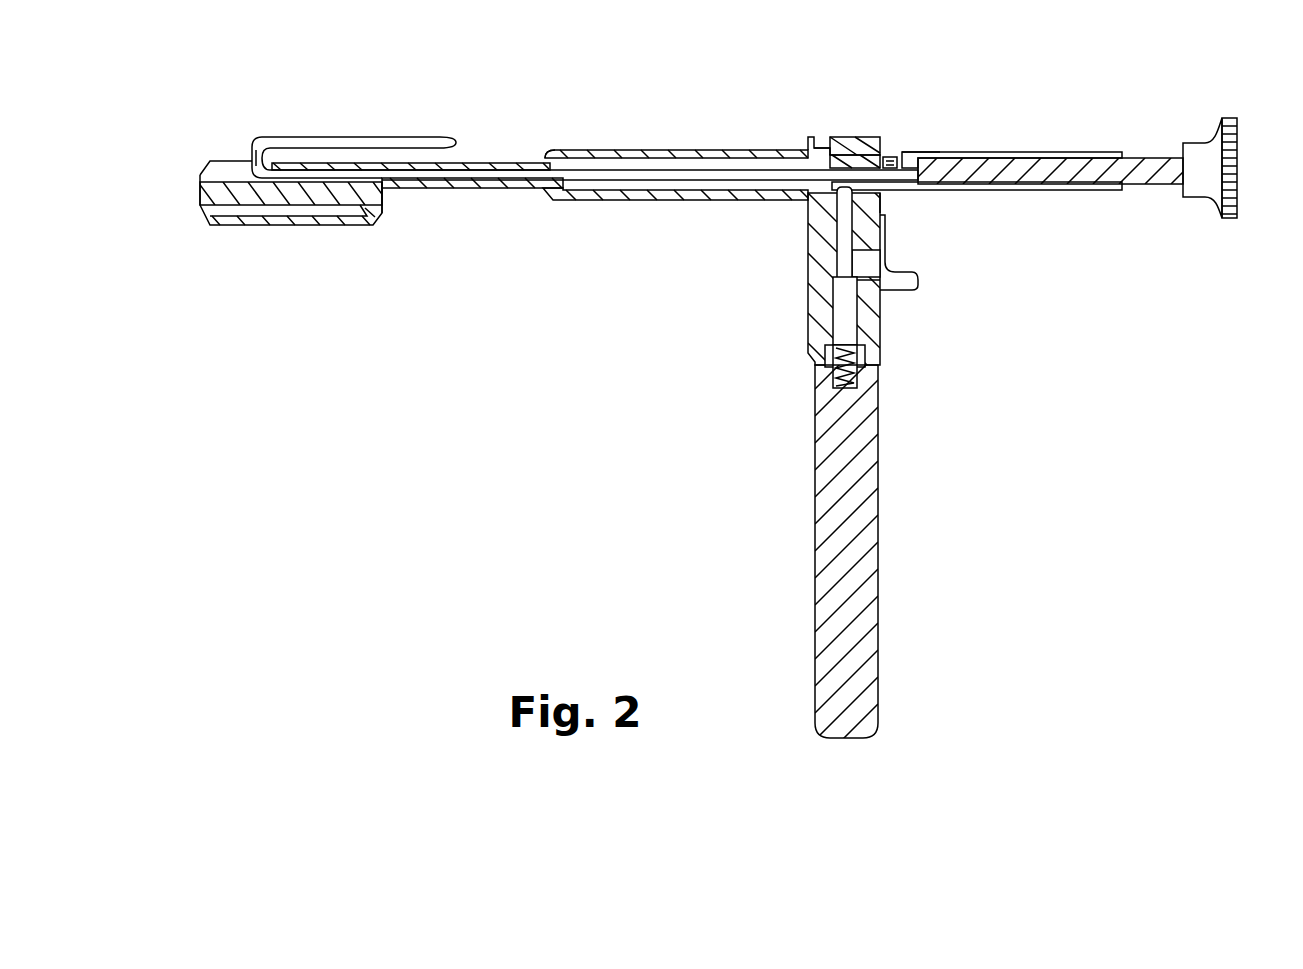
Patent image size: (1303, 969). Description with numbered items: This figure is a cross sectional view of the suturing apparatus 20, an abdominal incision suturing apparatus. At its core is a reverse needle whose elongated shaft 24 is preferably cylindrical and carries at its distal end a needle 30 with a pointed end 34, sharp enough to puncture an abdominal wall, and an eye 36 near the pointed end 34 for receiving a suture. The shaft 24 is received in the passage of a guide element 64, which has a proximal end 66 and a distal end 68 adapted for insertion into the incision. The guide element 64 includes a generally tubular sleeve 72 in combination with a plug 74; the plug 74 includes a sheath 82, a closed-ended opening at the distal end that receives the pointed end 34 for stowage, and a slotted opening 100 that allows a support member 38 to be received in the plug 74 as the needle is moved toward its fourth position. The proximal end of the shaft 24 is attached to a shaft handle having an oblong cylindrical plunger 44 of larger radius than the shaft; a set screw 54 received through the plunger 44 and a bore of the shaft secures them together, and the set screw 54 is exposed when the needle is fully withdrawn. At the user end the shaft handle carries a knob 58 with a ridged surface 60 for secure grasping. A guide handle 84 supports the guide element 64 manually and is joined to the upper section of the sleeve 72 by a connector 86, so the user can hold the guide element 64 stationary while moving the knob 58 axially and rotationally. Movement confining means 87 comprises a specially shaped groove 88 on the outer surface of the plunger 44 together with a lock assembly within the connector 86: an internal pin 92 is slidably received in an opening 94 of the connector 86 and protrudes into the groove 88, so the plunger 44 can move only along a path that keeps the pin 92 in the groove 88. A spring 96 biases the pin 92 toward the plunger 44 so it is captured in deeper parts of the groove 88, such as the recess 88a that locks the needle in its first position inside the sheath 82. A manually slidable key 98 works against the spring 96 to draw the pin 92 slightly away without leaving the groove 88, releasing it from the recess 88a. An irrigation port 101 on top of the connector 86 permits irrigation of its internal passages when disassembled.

The suturing apparatus 20 is at (564, 510).
The elongated shaft 24 is at (652, 182).
The needle 30 is at (303, 137).
The pointed end 34 is at (448, 144).
The eye 36 is at (424, 133).
The support member 38 is at (255, 146).
The plunger 44 is at (1086, 158).
The set screw 54 is at (900, 163).
The knob 58 is at (1200, 185).
The ridged surface 60 is at (1230, 118).
The guide element 64 is at (547, 236).
The proximal end 66 is at (806, 146).
The distal end 68 is at (234, 225).
The sleeve 72 is at (553, 159).
The plug 74 is at (384, 218).
The sheath 82 is at (222, 209).
The guide handle 84 is at (862, 548).
The connector 86 is at (860, 138).
The movement confining means 87 is at (984, 236).
The groove 88 is at (1036, 152).
The recess 88a is at (947, 153).
The internal pin 92 is at (843, 212).
The opening 94 is at (847, 262).
The spring 96 is at (855, 373).
The key 98 is at (898, 283).
The slotted opening 100 is at (222, 167).
The irrigation port 101 is at (821, 150).